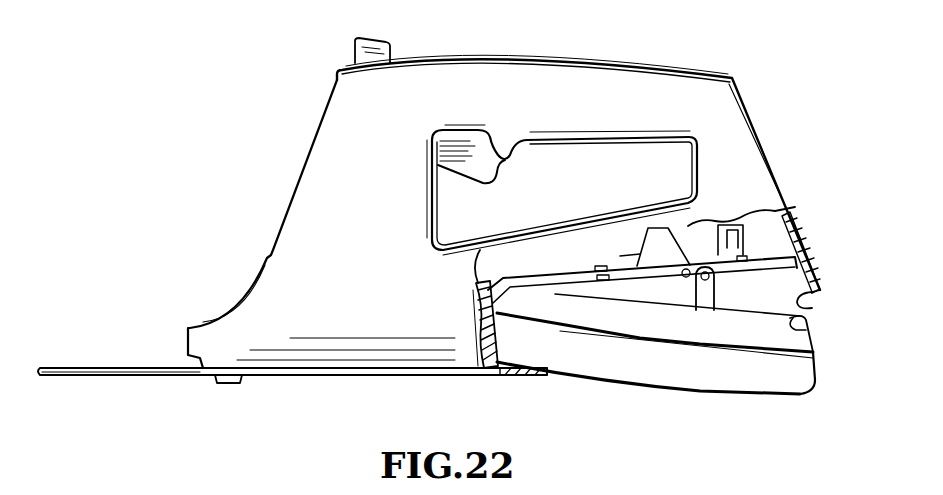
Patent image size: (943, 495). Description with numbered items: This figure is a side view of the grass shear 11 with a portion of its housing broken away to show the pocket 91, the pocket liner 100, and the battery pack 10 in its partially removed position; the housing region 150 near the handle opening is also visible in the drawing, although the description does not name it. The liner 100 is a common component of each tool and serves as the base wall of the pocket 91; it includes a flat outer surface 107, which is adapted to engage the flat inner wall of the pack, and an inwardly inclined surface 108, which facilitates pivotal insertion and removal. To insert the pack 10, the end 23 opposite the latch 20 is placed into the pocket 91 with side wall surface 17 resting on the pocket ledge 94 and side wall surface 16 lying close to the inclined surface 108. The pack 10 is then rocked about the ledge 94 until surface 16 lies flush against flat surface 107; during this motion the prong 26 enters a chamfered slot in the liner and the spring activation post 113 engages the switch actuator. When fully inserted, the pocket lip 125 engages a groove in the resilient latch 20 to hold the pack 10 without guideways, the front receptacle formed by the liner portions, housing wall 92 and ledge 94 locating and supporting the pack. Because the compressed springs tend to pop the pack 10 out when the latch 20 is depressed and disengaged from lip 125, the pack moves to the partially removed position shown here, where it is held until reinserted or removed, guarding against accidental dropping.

The battery pack 10 is at (651, 349).
The grass shear 11 is at (648, 64).
The side wall surface 16 is at (805, 322).
The side wall surface 17 is at (645, 386).
The latch 20 is at (814, 354).
The pack side 23 is at (486, 297).
The prong 26 is at (705, 312).
The pocket 91 is at (813, 300).
The housing wall 92 is at (480, 340).
The pocket ledge 94 is at (546, 376).
The pocket liner 100 is at (765, 243).
The flat outer surface 107 is at (816, 252).
The inwardly inclined surface 108 is at (577, 283).
The spring activation post 113 is at (682, 278).
The pocket lip 125 is at (818, 308).
The handle grip portion 150 is at (497, 186).